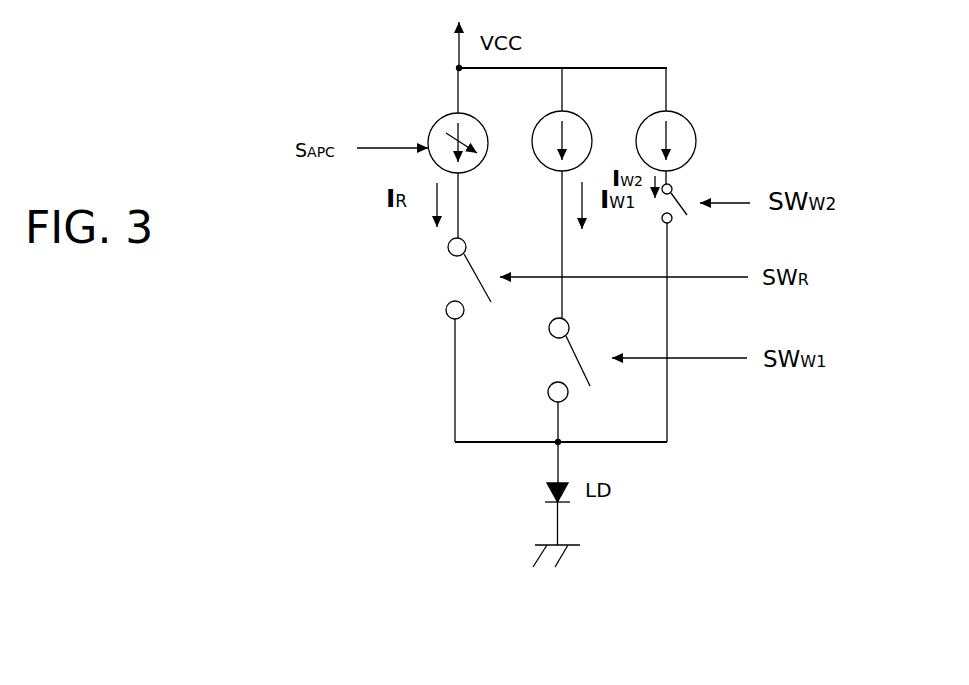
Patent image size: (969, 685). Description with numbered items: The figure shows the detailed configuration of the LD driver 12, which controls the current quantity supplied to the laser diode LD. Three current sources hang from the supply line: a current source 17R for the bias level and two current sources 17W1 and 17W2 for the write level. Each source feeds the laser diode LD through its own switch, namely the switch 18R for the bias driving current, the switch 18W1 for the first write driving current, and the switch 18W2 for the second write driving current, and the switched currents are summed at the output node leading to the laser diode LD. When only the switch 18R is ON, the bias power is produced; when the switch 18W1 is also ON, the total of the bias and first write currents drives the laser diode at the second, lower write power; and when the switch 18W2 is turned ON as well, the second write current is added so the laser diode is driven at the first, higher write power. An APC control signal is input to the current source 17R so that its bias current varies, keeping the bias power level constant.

The LD driver 12 is at (575, 43).
The current source for a bias level 17R is at (430, 130).
The current source for a write level 17W1 is at (588, 123).
The current source for a write level 17W2 is at (687, 110).
The switch 18R is at (447, 273).
The switch 18W1 is at (562, 352).
The switch 18W2 is at (662, 205).